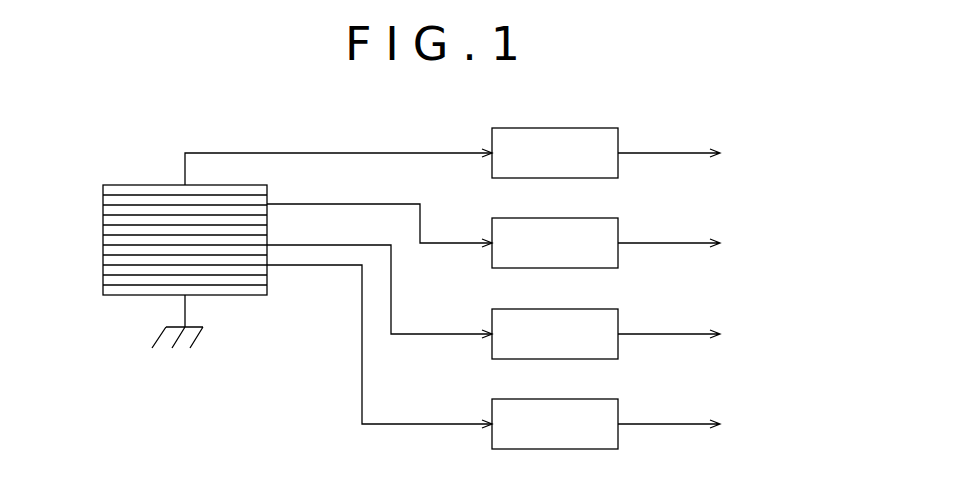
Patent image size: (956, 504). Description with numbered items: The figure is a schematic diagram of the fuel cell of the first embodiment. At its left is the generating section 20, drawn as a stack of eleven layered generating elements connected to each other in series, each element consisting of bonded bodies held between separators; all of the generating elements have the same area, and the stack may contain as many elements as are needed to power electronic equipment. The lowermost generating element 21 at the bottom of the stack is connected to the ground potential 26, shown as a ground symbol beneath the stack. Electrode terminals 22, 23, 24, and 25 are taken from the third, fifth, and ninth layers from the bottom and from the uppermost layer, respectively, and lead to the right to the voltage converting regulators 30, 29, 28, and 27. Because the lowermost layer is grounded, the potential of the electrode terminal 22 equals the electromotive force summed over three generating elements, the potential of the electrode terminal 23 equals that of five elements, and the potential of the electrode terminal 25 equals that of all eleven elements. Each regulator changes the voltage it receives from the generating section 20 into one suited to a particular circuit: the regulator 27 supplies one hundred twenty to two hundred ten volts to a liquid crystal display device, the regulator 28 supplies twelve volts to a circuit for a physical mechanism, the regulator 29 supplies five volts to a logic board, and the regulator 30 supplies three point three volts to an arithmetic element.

The generating section 20 is at (124, 425).
The lowermost generating element 21 is at (255, 291).
The electrode terminal 22 is at (267, 268).
The electrode terminal 23 is at (268, 236).
The electrode terminal 24 is at (268, 194).
The electrode terminal 25 is at (184, 161).
The ground potential 26 is at (153, 340).
The voltage converting regulator 27 is at (593, 128).
The voltage converting regulator 28 is at (593, 218).
The voltage converting regulator 29 is at (593, 308).
The voltage converting regulator 30 is at (593, 398).